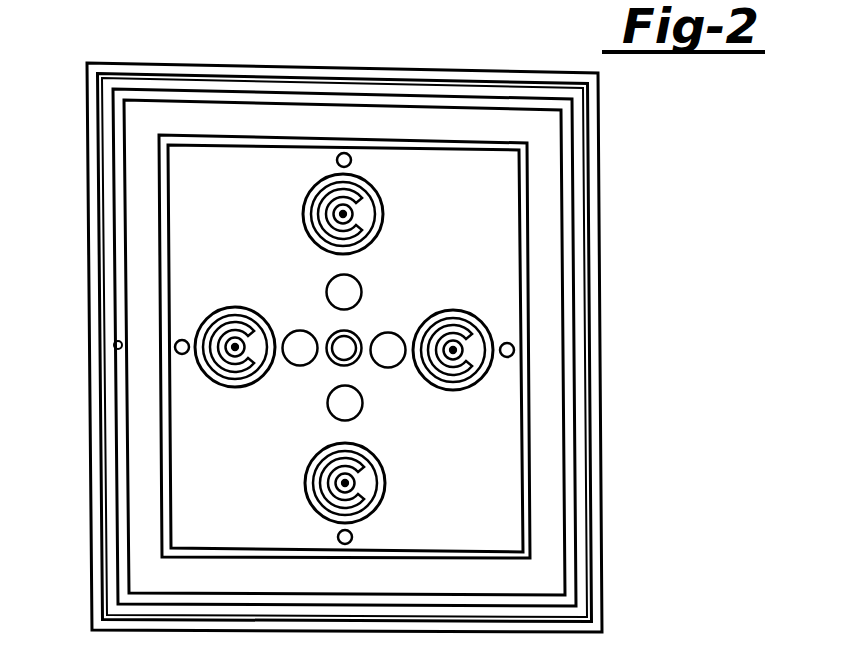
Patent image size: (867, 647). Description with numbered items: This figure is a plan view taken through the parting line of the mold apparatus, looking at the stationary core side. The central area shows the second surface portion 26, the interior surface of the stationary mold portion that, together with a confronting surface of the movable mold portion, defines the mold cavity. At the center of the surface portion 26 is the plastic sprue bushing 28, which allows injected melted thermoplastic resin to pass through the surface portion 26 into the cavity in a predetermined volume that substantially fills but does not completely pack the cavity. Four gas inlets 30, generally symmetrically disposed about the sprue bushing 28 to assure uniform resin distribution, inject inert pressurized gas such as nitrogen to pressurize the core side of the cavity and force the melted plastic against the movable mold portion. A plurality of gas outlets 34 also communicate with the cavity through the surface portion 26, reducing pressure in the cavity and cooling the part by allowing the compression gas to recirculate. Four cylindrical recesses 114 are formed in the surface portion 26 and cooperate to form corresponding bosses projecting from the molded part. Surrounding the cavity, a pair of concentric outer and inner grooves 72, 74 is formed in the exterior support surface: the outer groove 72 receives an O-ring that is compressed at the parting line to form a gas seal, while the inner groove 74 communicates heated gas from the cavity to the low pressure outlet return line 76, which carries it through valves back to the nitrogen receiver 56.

The second surface portion 26 is at (550, 205).
The plastic sprue bushing 28 is at (352, 339).
The gas inlets 30 is at (382, 210).
The gas outlets 34 is at (344, 153).
The nitrogen receiver 56 is at (471, 7).
The outer groove 72 is at (590, 243).
The inner groove 74 is at (568, 290).
The low pressure outlet return line 76 is at (114, 345).
The cylindrical recesses 114 is at (328, 285).